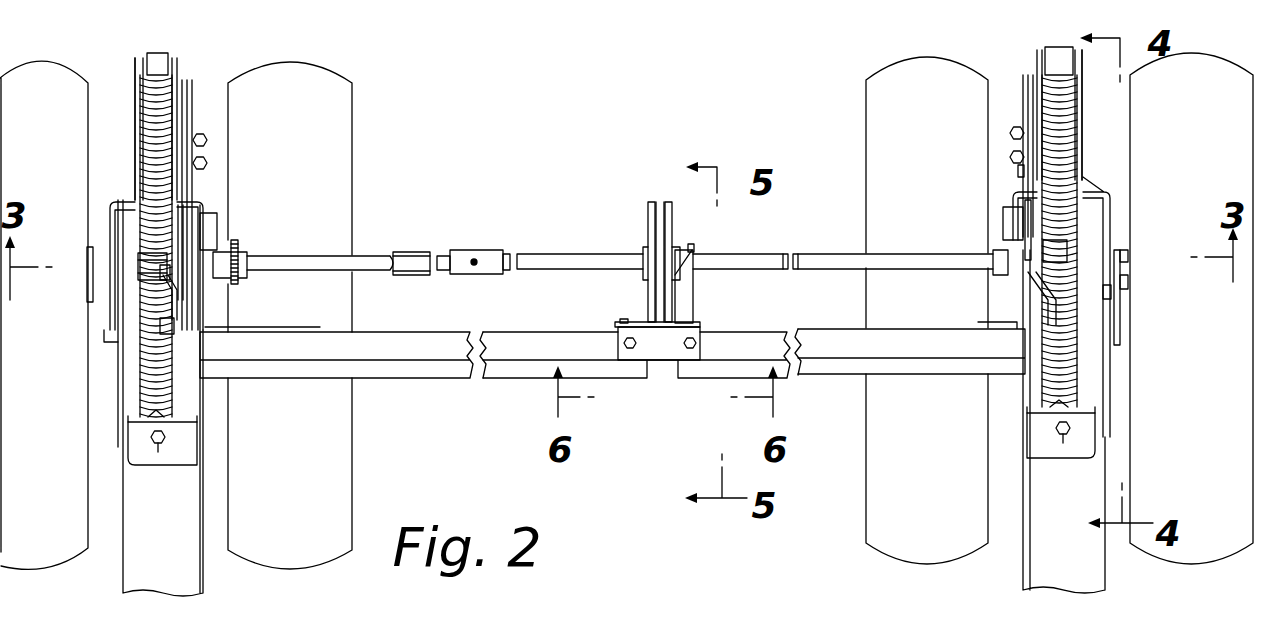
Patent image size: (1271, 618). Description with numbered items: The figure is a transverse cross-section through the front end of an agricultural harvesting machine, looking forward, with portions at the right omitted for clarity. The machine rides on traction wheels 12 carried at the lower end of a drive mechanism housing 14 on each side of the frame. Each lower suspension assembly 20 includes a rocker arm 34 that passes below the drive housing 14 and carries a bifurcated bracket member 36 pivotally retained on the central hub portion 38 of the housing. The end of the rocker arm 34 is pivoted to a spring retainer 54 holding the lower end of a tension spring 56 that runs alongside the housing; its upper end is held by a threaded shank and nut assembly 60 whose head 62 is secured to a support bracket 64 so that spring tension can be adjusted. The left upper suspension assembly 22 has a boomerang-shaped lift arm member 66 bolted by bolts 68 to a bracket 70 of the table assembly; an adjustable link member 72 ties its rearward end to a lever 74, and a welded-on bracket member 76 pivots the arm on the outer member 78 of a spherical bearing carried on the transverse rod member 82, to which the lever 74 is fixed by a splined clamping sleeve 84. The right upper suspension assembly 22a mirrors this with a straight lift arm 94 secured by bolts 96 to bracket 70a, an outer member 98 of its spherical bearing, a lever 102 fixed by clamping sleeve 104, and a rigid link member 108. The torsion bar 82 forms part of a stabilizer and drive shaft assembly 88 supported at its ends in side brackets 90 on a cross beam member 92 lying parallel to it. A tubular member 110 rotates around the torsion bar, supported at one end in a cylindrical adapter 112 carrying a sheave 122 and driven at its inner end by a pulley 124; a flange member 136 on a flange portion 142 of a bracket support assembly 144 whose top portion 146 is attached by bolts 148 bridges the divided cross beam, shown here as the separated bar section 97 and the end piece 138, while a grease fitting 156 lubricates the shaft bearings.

The traction wheels 12 is at (45, 540).
The drive mechanism housing 14 is at (185, 572).
The lower suspension assembly 20 is at (128, 145).
The upper suspension assembly 22 is at (204, 184).
The right hand upper suspension assembly 22a is at (1004, 172).
The rocker arm 34 is at (136, 60).
The bifurcated bracket member 36 is at (112, 202).
The central hub portion 38 is at (108, 340).
The spring retainer 54 is at (160, 57).
The tension spring 56 is at (148, 100).
The threaded shank and nut assembly 60 is at (130, 417).
The head 62 is at (158, 452).
The support bracket 64 is at (180, 458).
The lift arm member 66 is at (185, 218).
The bolts 68 is at (207, 163).
The bracket 70 is at (195, 100).
The bracket 70a is at (1022, 110).
The adjustable link member 72 is at (175, 335).
The lever 74 is at (150, 297).
The bracket member 76 is at (150, 277).
The outer member 78 is at (192, 282).
The transverse rod member 82 is at (438, 252).
The clamping sleeve 84 is at (138, 265).
The stabilizer and drive shaft assembly 88 is at (387, 246).
The side brackets 90 is at (215, 228).
The cross beam member 92 is at (400, 372).
The lift arm 94 is at (1027, 217).
The bolts 96 is at (1010, 157).
The cross bar 97 is at (660, 378).
The outer member 98 is at (1035, 285).
The lever 102 is at (1030, 330).
The clamping sleeve 104 is at (1062, 252).
The rigid link member 108 is at (1104, 312).
The tubular member 110 is at (570, 253).
The cylindrical adapter 112 is at (247, 270).
The sheave 122 is at (240, 258).
The pulley 124 is at (650, 212).
The flange member 136 is at (692, 246).
The end cap 138 is at (995, 272).
The flange portion 142 is at (695, 285).
The bracket support assembly 144 is at (708, 312).
The top portion 146 is at (650, 340).
The bolts 148 is at (630, 352).
The grease fitting 156 is at (478, 250).